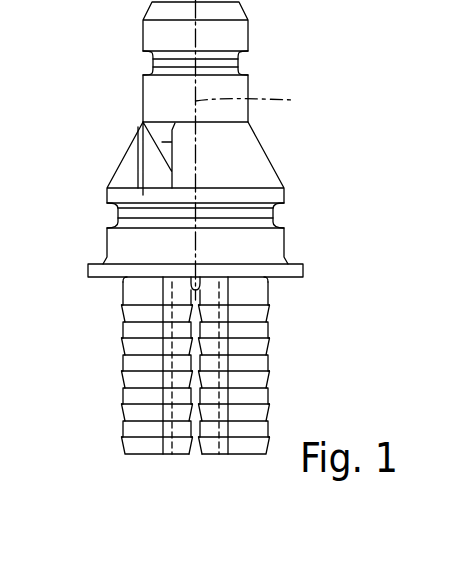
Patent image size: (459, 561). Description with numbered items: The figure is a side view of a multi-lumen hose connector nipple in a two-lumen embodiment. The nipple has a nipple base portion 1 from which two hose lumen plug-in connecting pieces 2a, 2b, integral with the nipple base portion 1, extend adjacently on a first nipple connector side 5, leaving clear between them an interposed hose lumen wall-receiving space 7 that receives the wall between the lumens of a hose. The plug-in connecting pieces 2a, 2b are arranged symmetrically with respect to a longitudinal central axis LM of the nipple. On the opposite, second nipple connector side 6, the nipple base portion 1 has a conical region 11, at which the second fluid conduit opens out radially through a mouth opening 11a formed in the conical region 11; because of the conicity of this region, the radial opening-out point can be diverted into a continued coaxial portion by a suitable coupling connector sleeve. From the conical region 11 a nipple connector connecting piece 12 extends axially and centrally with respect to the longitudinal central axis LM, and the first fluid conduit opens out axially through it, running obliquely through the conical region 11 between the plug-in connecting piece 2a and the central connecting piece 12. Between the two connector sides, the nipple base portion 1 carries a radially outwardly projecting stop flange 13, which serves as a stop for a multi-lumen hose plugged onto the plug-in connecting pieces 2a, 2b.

The nipple base portion 1 is at (285, 232).
The hose lumen plug-in connecting piece 2a is at (257, 443).
The hose lumen plug-in connecting piece 2b is at (147, 453).
The first nipple connector side 5 is at (270, 275).
The second nipple connector side 6 is at (258, 142).
The hose lumen wall-receiving space 7 is at (195, 417).
The conical region 11 is at (273, 170).
The mouth opening 11a is at (158, 160).
The nipple connector connecting piece 12 is at (248, 36).
The stop flange 13 is at (295, 270).
The longitudinal central axis LM is at (269, 97).